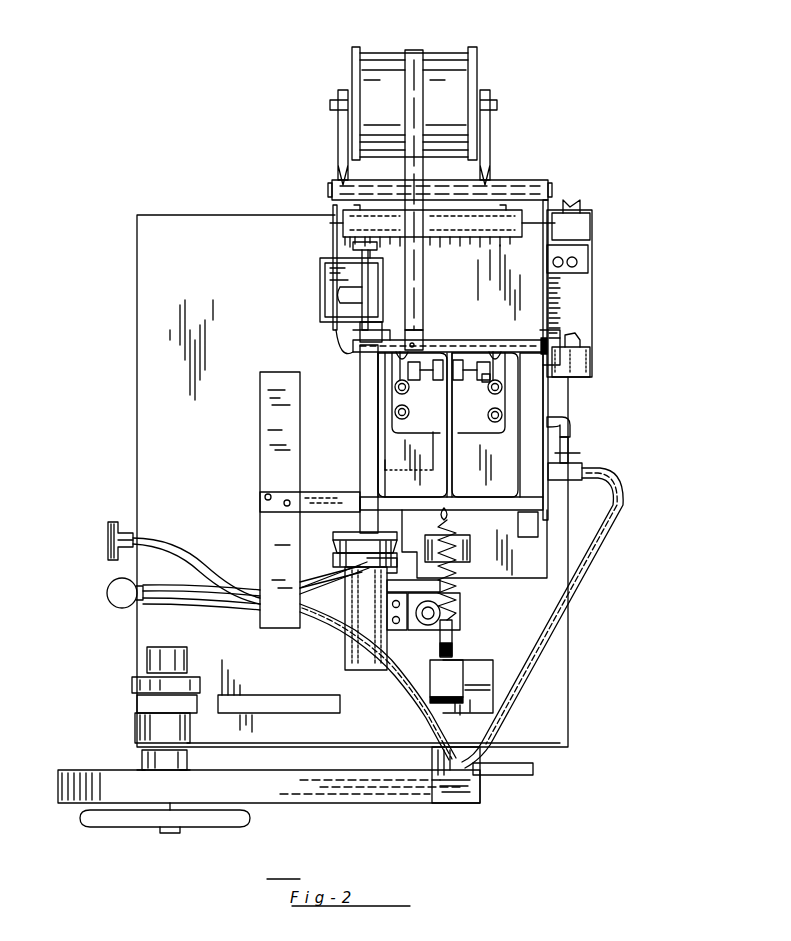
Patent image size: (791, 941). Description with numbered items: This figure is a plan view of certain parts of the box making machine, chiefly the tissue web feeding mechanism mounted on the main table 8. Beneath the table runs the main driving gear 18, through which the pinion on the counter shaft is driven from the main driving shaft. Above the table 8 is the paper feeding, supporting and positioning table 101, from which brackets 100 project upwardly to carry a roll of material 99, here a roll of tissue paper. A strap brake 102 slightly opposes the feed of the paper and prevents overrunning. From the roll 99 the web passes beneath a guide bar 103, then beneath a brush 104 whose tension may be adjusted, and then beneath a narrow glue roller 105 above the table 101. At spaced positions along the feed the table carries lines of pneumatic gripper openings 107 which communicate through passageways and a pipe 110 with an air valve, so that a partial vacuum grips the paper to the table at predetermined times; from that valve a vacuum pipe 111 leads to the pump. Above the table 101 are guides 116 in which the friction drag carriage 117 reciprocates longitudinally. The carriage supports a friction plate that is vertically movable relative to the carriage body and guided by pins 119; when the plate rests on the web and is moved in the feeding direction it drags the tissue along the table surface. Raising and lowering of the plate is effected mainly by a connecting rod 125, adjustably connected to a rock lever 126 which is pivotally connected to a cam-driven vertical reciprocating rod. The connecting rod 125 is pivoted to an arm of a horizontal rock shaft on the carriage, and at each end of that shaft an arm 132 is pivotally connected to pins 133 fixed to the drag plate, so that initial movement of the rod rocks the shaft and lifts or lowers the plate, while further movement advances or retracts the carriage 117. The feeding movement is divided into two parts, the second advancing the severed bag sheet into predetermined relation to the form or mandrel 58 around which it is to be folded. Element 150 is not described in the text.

The table 8 is at (170, 283).
The main driving gear 18 is at (127, 690).
The form or mandrel 58 is at (360, 655).
The roll of material 99 is at (443, 95).
The brackets 100 is at (340, 137).
The paper feeding, supporting and positioning table 101 is at (530, 297).
The strap brake 102 is at (414, 50).
The guide bar 103 is at (510, 190).
The brush 104 is at (453, 238).
The glue roller 105 is at (340, 290).
The pneumatic gripper openings 107 is at (395, 474).
The pipe 110 is at (608, 482).
The vacuum pipe 111 is at (408, 695).
The guides 116 is at (374, 435).
The friction drag carriage 117 is at (476, 417).
The pins 119 is at (395, 412).
The connecting rod 125 is at (455, 632).
The rock lever 126 is at (440, 646).
The arm 132 is at (430, 372).
The pins 133 is at (407, 389).
The block 150 is at (477, 378).